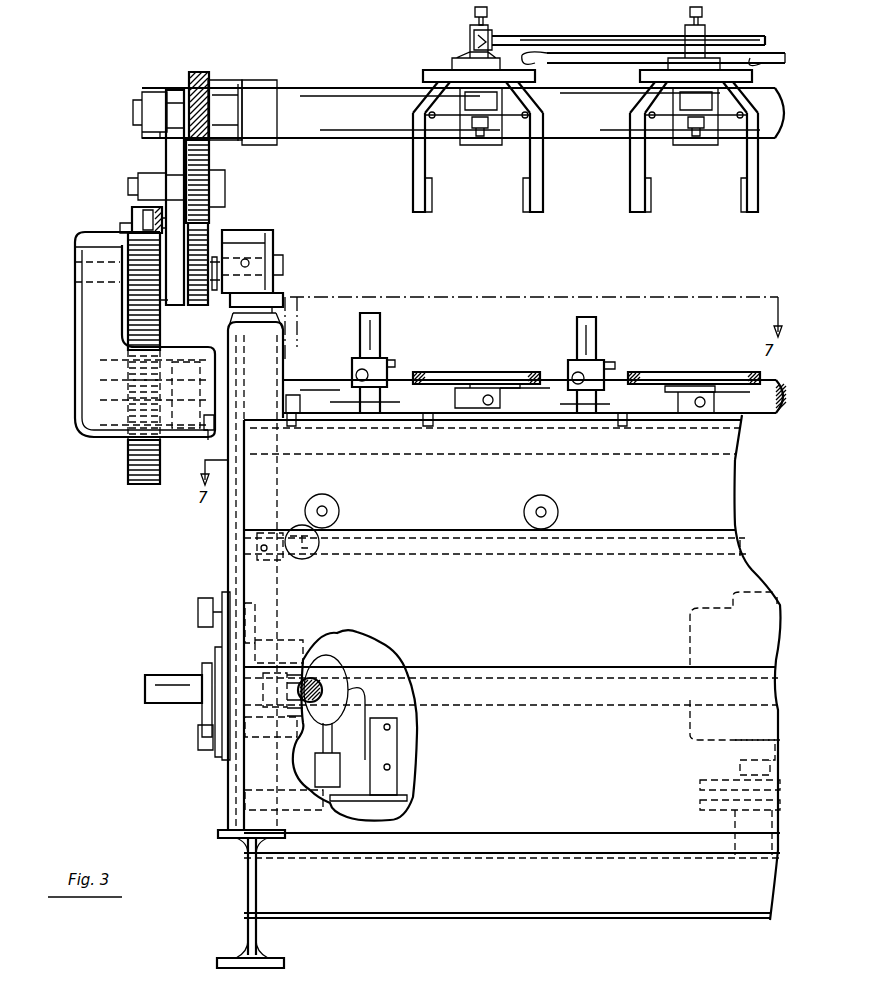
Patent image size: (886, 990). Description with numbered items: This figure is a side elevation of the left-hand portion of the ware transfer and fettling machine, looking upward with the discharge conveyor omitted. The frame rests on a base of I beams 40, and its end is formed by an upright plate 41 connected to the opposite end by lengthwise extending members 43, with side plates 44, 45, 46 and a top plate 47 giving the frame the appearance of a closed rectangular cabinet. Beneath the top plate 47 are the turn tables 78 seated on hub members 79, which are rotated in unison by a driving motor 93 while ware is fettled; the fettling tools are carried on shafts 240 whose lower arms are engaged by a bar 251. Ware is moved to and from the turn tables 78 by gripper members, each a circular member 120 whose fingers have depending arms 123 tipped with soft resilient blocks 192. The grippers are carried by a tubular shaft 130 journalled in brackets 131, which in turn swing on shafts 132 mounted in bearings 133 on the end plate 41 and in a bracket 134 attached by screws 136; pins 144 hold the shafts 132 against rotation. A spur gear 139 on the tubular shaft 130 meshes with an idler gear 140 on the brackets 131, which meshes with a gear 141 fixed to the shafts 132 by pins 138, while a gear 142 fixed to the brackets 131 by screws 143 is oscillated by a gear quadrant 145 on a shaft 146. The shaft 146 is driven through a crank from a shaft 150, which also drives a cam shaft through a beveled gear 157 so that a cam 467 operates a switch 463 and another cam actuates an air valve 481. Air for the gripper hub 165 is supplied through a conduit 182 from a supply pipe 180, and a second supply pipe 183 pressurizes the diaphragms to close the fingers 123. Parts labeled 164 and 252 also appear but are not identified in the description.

The I beams 40 is at (634, 690).
The end plate 41 is at (226, 552).
The lengthwise extending members 43 is at (493, 437).
The side plate 44 is at (512, 840).
The side plate 45 is at (511, 661).
The side plate 46 is at (496, 516).
The top plate 47 is at (655, 418).
The turn tables 78 is at (470, 372).
The hub members 79 is at (455, 395).
The driving motor 93 is at (700, 640).
The circular member 120 is at (585, 141).
The depending arm 123 is at (413, 188).
The tubular shaft 130 is at (458, 112).
The brackets 131 is at (166, 150).
The shafts 132 is at (283, 262).
The bearings 133 is at (273, 232).
The bracket 134 is at (145, 334).
The screws 136 is at (208, 440).
The pins 138 is at (230, 300).
The spur gear 139 is at (209, 74).
The idler gear 140 is at (225, 168).
The gear 141 is at (208, 240).
The gear 142 is at (160, 320).
The screws 143 is at (132, 218).
The pins 144 is at (249, 265).
The gear quadrant 145 is at (145, 484).
The shaft 146 is at (300, 388).
The shaft 150 is at (145, 680).
The beveled gear 157 is at (284, 706).
The clamp base 164 is at (456, 62).
The hub 165 is at (470, 34).
The supply pipe 180 is at (545, 36).
The conduit 182 is at (487, 12).
The supply pipe 183 is at (565, 65).
The blocks 192 is at (432, 192).
The shafts 240 is at (380, 335).
The bar 251 is at (620, 560).
The roller 252 is at (284, 562).
The switch 463 is at (363, 742).
The cam 467 is at (335, 672).
The air valve 481 is at (318, 758).